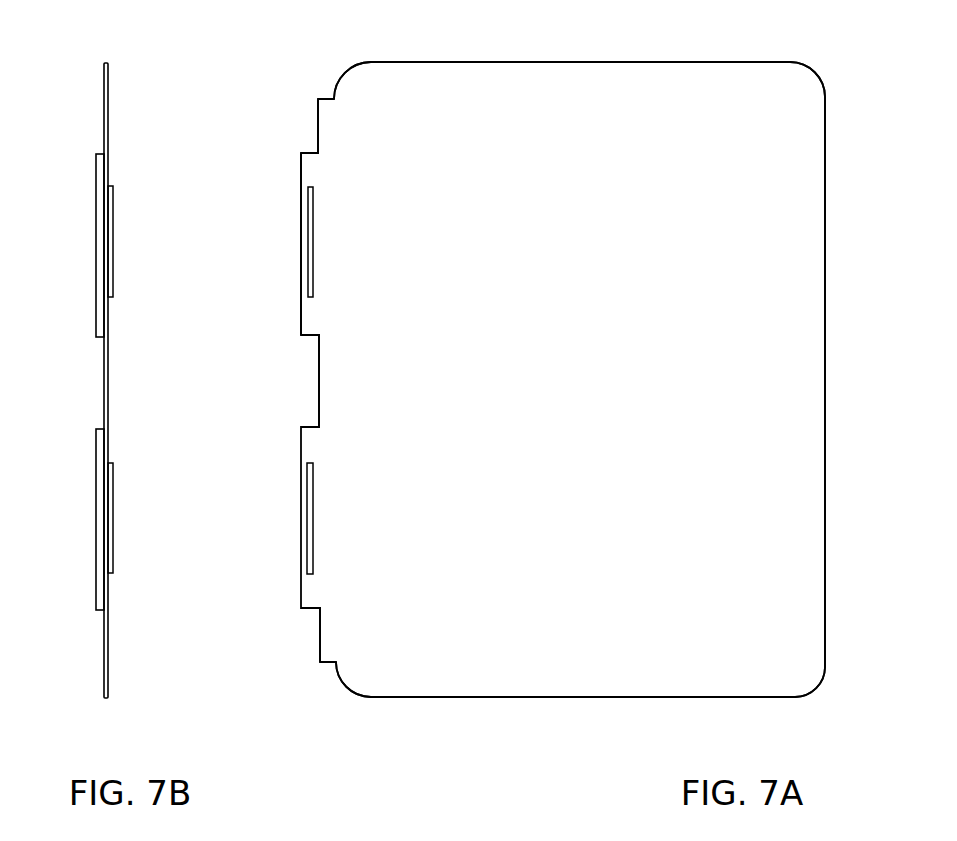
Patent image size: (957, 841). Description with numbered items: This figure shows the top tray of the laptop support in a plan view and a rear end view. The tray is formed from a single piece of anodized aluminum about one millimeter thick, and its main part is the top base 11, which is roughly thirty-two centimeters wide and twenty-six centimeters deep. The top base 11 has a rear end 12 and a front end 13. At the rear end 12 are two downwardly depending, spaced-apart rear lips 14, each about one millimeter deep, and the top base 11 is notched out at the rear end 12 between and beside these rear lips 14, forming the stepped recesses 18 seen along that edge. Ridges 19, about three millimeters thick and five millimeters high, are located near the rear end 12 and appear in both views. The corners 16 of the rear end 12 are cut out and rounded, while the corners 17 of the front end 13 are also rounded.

In FIG. 7A, the top base 11 is at (525, 88).
In FIG. 7B, the top base 11 is at (110, 78).
In FIG. 7A, the rear end 12 is at (301, 175).
In FIG. 7A, the front end 13 is at (825, 323).
In FIG. 7B, the rear lips 14 is at (102, 238).
In FIG. 7A, the corners 16 is at (358, 78).
In FIG. 7A, the corners 17 is at (795, 78).
In FIG. 7A, the notch / step recess 18 is at (311, 137).
In FIG. 7A, the ridges 19 is at (313, 229).
In FIG. 7B, the ridges 19 is at (112, 224).